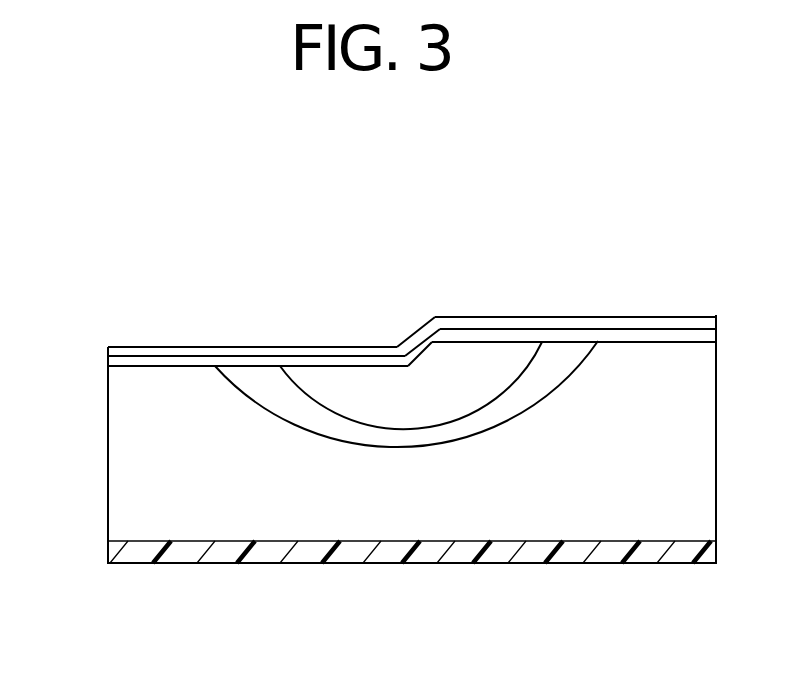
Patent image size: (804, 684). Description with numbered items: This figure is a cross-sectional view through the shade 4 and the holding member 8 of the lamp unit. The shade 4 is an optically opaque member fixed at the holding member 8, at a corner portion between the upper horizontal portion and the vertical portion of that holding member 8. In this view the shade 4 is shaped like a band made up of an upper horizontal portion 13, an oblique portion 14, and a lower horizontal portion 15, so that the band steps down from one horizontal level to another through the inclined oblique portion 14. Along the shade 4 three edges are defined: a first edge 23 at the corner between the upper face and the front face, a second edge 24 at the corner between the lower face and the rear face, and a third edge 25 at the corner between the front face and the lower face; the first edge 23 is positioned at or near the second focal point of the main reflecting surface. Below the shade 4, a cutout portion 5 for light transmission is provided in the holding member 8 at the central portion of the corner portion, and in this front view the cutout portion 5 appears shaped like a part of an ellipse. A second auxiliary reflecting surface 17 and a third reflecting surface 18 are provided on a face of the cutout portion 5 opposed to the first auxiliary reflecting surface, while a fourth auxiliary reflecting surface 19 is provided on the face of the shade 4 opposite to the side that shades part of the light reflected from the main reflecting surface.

The shade 4 is at (155, 348).
The cutout portion 5 is at (335, 388).
The holding member 8 is at (128, 381).
The upper horizontal portion 13 is at (587, 313).
The oblique portion 14 is at (421, 326).
The lower horizontal portion 15 is at (245, 345).
The second auxiliary reflecting surface 17 is at (548, 370).
The third reflecting surface 18 is at (472, 373).
The fourth auxiliary reflecting surface 19 is at (460, 334).
The first edge 23 is at (610, 316).
The second edge 24 is at (641, 341).
The third edge 25 is at (622, 325).